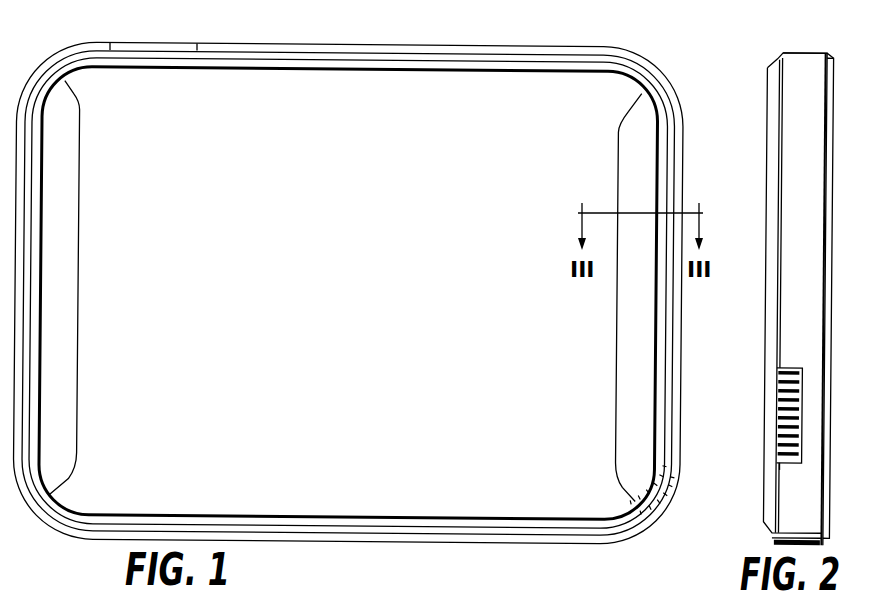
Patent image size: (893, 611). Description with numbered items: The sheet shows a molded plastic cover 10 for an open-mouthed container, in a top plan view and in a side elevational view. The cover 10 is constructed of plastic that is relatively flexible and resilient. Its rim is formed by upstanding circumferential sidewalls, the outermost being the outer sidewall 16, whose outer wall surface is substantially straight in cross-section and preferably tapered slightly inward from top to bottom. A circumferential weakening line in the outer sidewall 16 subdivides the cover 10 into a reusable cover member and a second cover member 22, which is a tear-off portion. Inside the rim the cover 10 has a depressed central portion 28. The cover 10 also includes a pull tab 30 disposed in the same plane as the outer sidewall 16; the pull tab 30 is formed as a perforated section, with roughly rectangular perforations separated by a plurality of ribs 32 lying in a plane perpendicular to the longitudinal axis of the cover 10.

In FIG. 1, the cover 10 is at (719, 175).
In FIG. 2, the cover 10 is at (758, 307).
In FIG. 2, the outer sidewall 16 is at (815, 53).
In FIG. 1, the second cover member 22 is at (667, 93).
In FIG. 1, the depressed central portion 28 is at (374, 210).
In FIG. 1, the pull tab 30 is at (113, 43).
In FIG. 2, the pull tab 30 is at (785, 397).
In FIG. 2, the ribs 32 is at (778, 418).